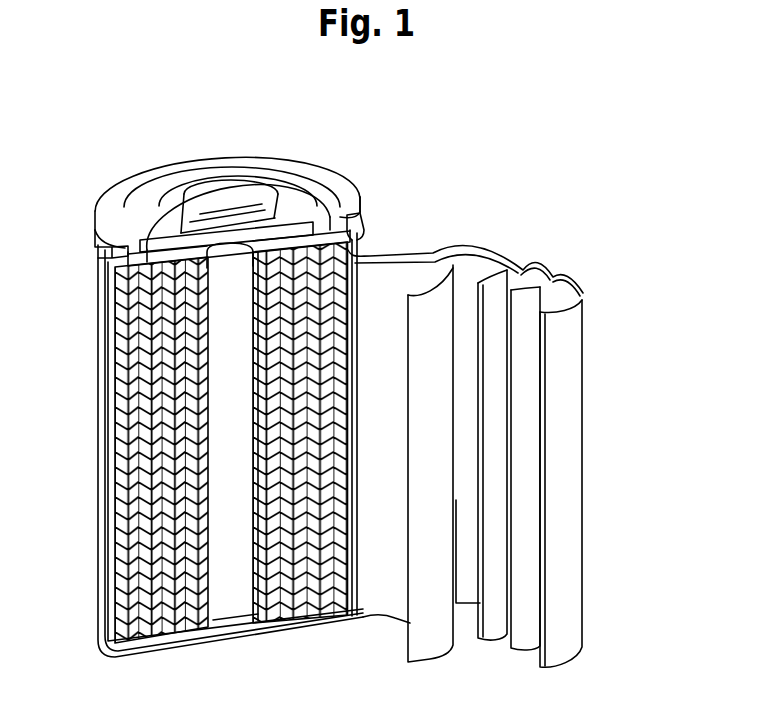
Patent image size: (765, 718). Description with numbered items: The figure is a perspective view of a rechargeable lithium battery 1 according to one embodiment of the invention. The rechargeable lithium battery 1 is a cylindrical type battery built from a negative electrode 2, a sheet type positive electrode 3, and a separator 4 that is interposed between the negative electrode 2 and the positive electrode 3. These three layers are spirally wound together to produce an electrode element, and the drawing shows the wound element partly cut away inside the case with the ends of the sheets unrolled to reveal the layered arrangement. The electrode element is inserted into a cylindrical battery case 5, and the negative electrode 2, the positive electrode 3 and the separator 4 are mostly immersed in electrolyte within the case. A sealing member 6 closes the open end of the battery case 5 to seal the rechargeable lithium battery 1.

The rechargeable lithium battery 1 is at (556, 229).
The negative electrode 2 is at (573, 365).
The positive electrode 3 is at (492, 290).
The separator 4 is at (435, 657).
The battery case 5 is at (98, 600).
The sealing member 6 is at (239, 183).